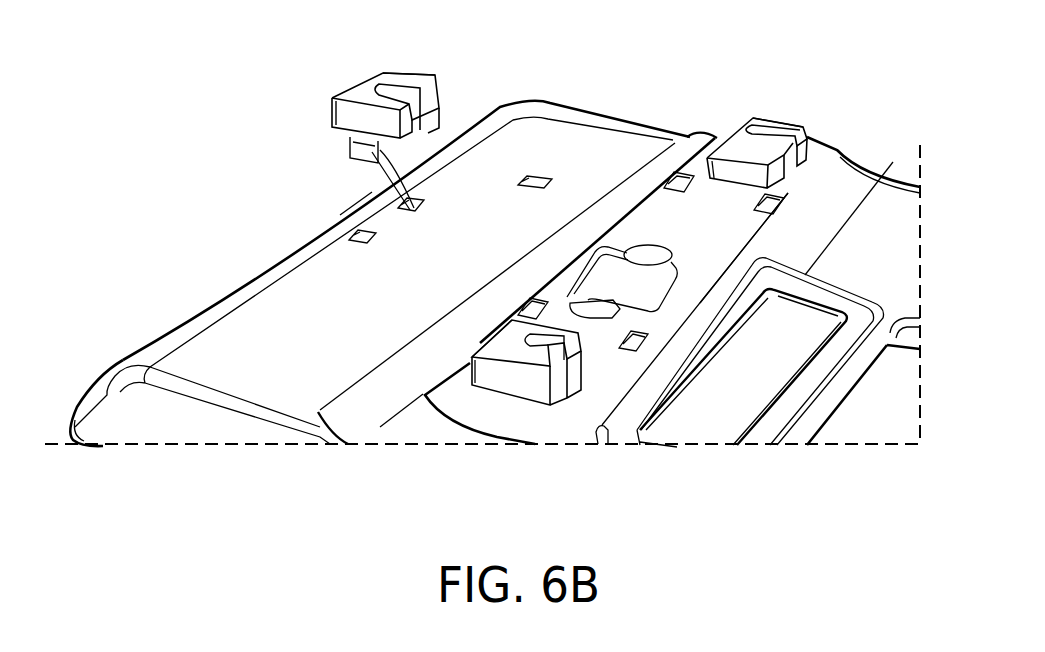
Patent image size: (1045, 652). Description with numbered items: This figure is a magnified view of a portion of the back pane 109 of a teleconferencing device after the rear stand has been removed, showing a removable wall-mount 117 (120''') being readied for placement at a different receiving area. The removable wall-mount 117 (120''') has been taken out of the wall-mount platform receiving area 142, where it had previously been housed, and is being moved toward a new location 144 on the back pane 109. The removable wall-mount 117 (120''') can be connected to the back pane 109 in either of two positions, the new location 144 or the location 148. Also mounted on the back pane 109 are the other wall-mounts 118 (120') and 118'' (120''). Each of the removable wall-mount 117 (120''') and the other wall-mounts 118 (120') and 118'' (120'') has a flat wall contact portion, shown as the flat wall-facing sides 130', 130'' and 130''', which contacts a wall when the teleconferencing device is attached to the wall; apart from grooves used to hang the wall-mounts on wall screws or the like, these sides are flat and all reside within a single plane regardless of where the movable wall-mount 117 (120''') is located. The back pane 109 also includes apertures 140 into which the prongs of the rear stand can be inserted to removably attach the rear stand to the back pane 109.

The back pane 109 is at (567, 113).
The removable wall-mount 117 is at (324, 136).
The wall-mount 120''' is at (385, 141).
The flat wall contact portion 130' is at (371, 47).
The new location 144 is at (355, 203).
The flat wall contact portion 130'' is at (737, 92).
The wall-mount 118'' is at (809, 116).
The wall-mount 120'' is at (757, 153).
The aperture 140 is at (797, 197).
The wall-mount receiving area 142 is at (657, 297).
The flat wall contact portion 130''' is at (327, 419).
The wall-mount 118 is at (455, 408).
The wall-mount 120' is at (526, 362).
The location 148 is at (617, 321).